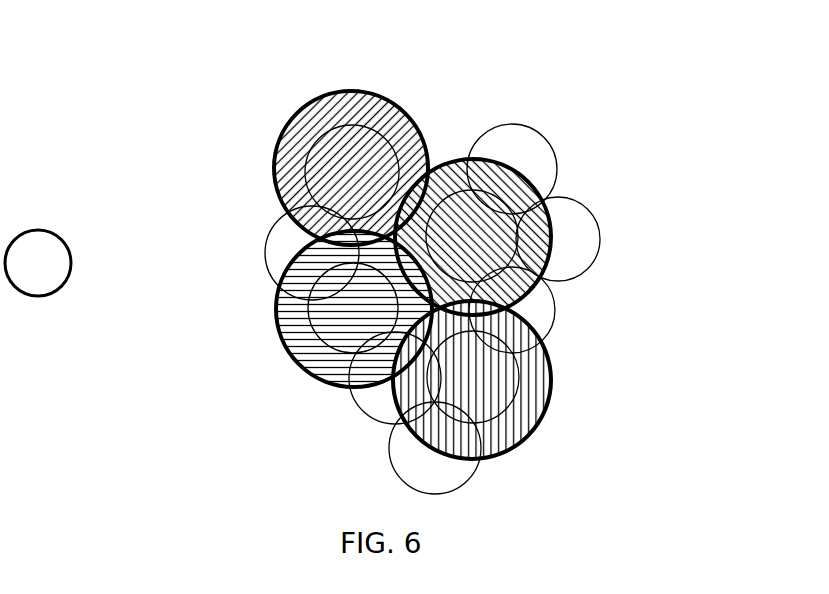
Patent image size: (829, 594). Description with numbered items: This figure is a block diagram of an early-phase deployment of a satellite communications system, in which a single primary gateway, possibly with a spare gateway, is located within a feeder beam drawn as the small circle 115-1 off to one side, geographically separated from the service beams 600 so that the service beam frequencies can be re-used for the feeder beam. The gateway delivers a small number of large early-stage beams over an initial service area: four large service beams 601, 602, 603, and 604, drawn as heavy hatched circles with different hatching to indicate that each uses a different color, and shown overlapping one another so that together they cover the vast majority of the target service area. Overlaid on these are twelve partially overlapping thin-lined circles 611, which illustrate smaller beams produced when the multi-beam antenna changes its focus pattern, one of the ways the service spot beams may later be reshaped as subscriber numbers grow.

The feeder beam 115-1 is at (38, 240).
The service beams 600 is at (480, 256).
The first service beam 601 is at (304, 105).
The second service beam 602 is at (290, 310).
The third service beam 603 is at (530, 370).
The fourth service beam 604 is at (548, 217).
The smaller beams 611 is at (390, 455).